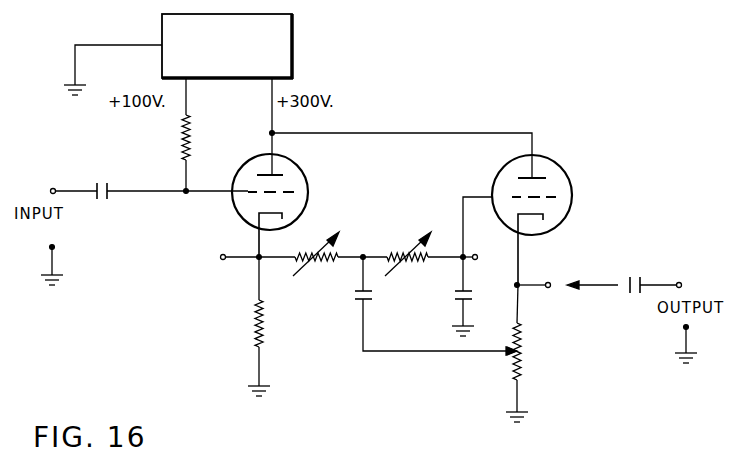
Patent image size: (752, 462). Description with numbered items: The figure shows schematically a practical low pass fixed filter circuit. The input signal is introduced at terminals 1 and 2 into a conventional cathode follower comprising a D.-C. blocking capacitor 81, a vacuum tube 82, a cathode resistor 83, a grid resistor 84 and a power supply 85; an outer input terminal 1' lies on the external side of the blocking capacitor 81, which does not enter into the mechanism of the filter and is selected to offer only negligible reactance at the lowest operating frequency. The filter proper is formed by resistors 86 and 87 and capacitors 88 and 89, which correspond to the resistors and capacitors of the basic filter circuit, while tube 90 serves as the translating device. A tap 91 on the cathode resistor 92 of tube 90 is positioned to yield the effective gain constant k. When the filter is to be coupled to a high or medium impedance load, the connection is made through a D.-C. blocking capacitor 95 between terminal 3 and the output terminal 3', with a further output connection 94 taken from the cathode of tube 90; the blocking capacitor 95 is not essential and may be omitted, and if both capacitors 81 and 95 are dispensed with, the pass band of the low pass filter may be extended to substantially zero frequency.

The input terminal 1' is at (44, 183).
The input terminal 1 is at (217, 255).
The input terminal 2 is at (50, 246).
The output terminal 3 is at (484, 257).
The output terminal 3' is at (691, 276).
The D.-C. blocking capacitor 81 is at (108, 196).
The vacuum tube 82 is at (298, 168).
The cathode resistor 83 is at (256, 325).
The grid resistor 84 is at (182, 137).
The power supply 85 is at (292, 43).
The resistor 86 is at (325, 262).
The resistor 87 is at (416, 262).
The capacitor 88 is at (464, 296).
The capacitor 89 is at (360, 296).
The tube 90 is at (564, 170).
The tap 91 is at (510, 362).
The cathode resistor 92 is at (521, 360).
The output terminal 94 is at (548, 288).
The D.-C. blocking capacitor 95 is at (630, 283).